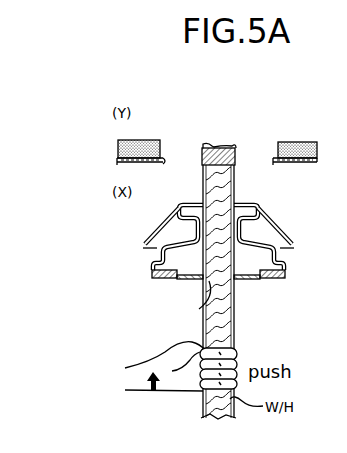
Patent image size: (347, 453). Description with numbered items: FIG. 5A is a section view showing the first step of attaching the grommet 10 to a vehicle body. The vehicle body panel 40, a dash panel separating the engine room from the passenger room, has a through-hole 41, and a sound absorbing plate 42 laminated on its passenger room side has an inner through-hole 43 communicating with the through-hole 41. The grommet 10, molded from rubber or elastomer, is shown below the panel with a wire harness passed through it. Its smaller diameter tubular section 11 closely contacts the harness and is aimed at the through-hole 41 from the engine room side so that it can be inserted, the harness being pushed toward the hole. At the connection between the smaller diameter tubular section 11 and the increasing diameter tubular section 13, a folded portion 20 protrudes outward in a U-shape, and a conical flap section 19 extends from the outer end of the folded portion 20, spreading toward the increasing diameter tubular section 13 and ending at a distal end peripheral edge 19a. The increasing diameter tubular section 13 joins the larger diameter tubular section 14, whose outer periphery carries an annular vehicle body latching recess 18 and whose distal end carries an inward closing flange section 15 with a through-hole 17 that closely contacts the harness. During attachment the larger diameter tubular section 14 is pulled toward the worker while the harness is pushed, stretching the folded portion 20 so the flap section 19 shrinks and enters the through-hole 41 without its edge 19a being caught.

The grommet 10 is at (204, 247).
The smaller diameter tubular section 11 is at (236, 178).
The increasing diameter tubular section 13 is at (247, 247).
The larger diameter tubular section 14 is at (153, 273).
The closing flange section 15 is at (197, 282).
The through-hole 17 is at (199, 309).
The vehicle body latching recess 18 is at (277, 268).
The flap section 19 is at (283, 233).
The distal end peripheral edge 19a is at (138, 244).
The folded portion 20 is at (252, 207).
The vehicle body panel 40 is at (297, 161).
The through-hole 41 is at (273, 158).
The sound absorbing plate 42 is at (287, 142).
The inner through-hole 43 is at (161, 152).